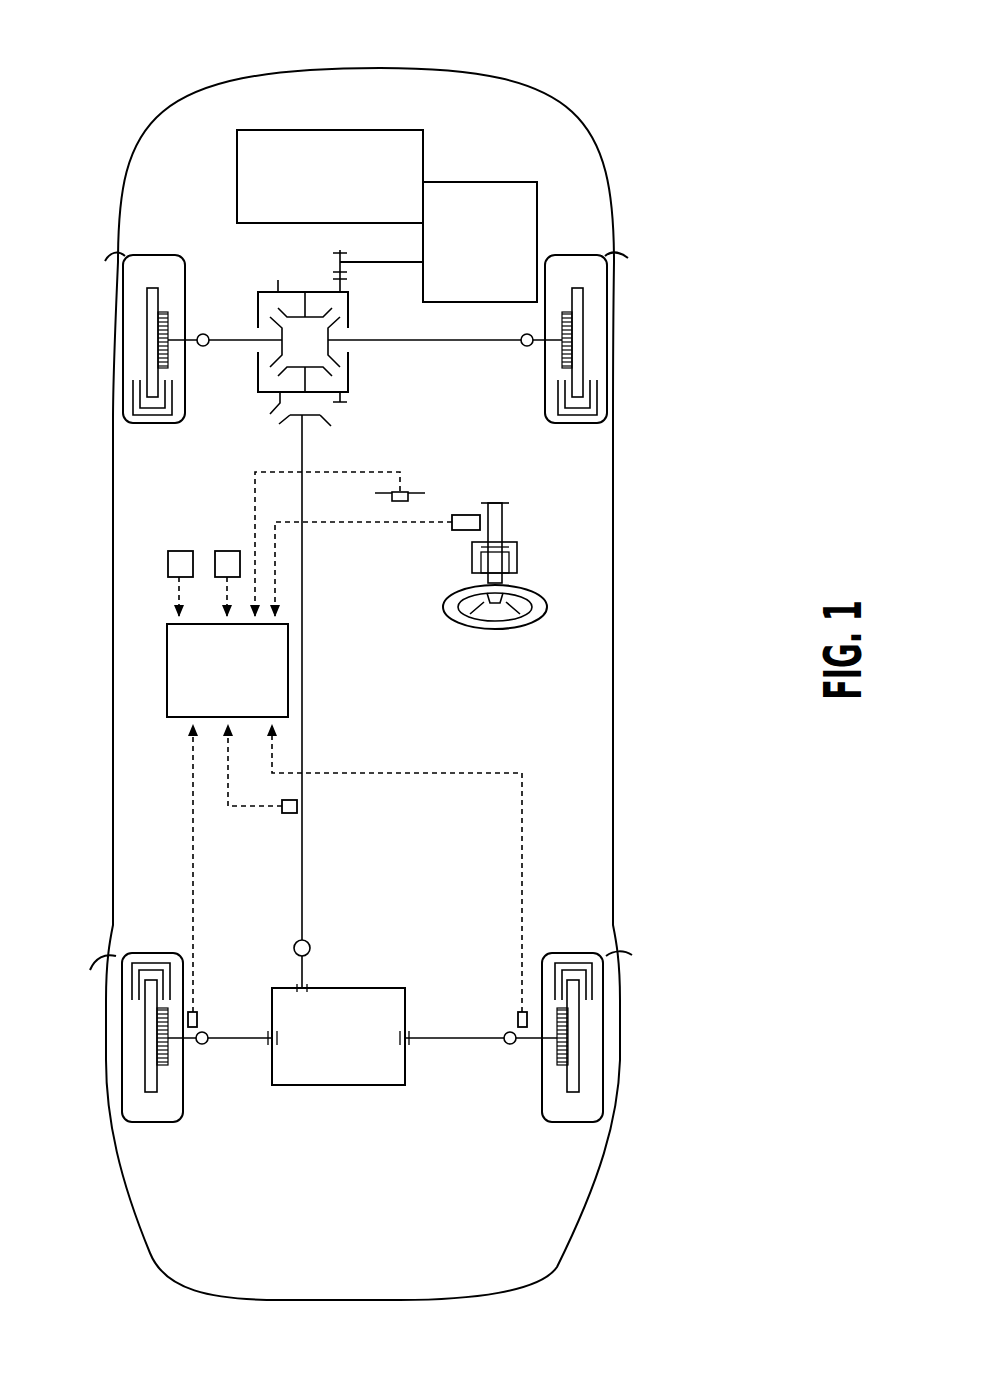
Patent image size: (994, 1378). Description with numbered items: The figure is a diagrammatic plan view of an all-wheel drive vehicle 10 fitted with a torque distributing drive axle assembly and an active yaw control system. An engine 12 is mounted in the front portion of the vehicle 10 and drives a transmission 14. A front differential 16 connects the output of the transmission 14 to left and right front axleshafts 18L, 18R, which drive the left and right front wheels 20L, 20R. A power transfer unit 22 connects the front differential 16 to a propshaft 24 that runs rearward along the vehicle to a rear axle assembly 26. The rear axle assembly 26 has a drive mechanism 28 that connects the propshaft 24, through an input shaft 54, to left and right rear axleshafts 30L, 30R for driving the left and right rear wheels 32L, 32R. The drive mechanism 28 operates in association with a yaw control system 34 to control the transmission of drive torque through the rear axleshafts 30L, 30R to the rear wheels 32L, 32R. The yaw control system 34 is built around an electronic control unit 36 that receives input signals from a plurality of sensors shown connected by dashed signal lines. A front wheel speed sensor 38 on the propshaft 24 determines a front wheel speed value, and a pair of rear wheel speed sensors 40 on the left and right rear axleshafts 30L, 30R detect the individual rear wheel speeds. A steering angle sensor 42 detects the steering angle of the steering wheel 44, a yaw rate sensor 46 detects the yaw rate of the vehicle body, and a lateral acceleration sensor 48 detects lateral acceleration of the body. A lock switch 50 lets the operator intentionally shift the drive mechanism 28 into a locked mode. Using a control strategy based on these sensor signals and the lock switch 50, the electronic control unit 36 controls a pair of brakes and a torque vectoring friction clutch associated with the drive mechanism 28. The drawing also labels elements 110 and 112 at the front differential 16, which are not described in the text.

The all-wheel drive vehicle 10 is at (634, 486).
The engine 12 is at (316, 142).
The transmission 14 is at (483, 192).
The front differential 16 is at (376, 374).
The left front axleshaft 18L is at (222, 343).
The right front axleshaft 18R is at (478, 343).
The left front wheel 20L is at (105, 259).
The right front wheel 20R is at (628, 260).
The power transfer unit 22 is at (266, 423).
The propshaft 24 is at (303, 666).
The rear axle assembly 26 is at (385, 1038).
The drive mechanism 28 is at (345, 1096).
The left rear axleshaft 30L is at (228, 1043).
The right rear axleshaft 30R is at (470, 1043).
The left rear wheel 32L is at (90, 970).
The right rear wheel 32R is at (632, 955).
The yaw control system 34 is at (280, 742).
The electronic control unit 36 is at (167, 676).
The front wheel speed sensor 38 is at (284, 815).
The rear wheel speed sensor 40 is at (197, 1019).
The steering angle sensor 42 is at (463, 520).
The steering wheel 44 is at (530, 620).
The yaw rate sensor 46 is at (219, 555).
The lateral acceleration sensor 48 is at (172, 555).
The lock switch 50 is at (398, 501).
The input shaft 54 is at (303, 967).
The differential case 110 is at (278, 280).
The differential gear set 112 is at (258, 303).